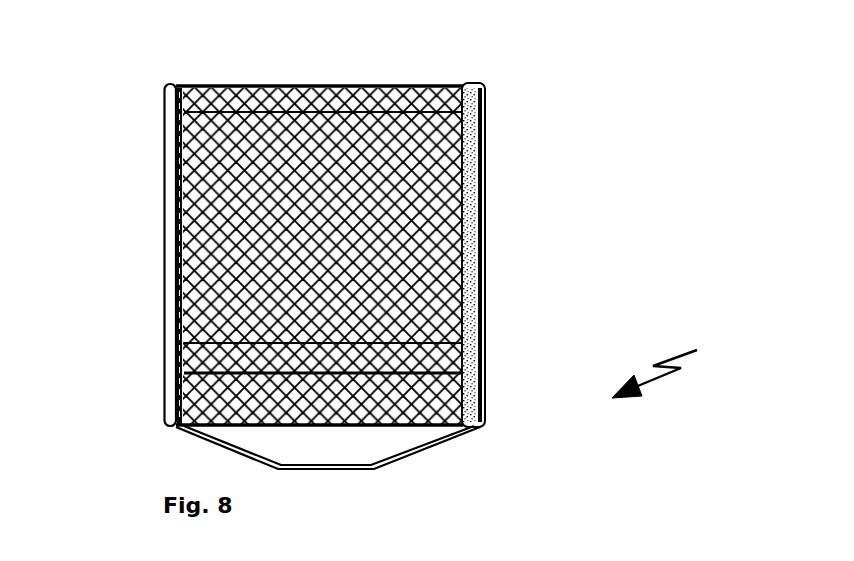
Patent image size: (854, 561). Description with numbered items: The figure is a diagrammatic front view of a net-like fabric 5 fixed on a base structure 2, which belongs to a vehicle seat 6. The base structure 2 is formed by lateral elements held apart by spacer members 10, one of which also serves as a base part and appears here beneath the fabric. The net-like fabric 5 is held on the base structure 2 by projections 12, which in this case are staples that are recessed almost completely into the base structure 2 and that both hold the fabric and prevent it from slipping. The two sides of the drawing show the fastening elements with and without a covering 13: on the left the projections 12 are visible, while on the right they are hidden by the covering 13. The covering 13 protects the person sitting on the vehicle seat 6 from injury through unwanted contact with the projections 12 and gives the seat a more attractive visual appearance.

The base structure 2 is at (480, 313).
The net-like fabric 5 is at (388, 229).
The vehicle seat 6 is at (666, 360).
The spacer member 10 is at (412, 452).
The projection 12 is at (178, 120).
The covering 13 is at (481, 162).